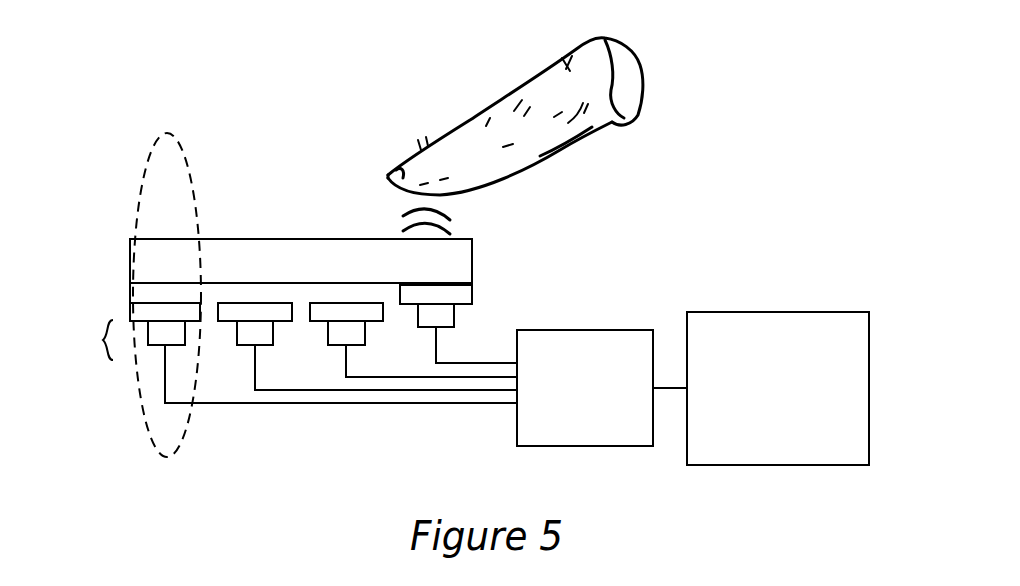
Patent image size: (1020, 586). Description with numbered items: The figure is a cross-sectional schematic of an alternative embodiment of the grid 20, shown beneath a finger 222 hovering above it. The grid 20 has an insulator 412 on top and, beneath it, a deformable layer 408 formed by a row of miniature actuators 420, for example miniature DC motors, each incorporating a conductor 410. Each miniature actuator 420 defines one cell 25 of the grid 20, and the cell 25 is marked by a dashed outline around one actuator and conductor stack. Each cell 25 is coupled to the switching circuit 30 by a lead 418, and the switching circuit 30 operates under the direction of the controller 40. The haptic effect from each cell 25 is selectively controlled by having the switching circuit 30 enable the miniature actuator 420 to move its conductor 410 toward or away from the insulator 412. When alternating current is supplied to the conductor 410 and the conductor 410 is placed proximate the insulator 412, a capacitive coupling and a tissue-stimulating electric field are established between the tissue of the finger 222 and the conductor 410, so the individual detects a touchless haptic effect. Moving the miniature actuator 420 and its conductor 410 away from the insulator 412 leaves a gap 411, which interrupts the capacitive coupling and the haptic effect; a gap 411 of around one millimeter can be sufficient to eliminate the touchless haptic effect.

The finger 222 is at (617, 77).
The grid 20 is at (323, 321).
The cell 25 is at (177, 138).
The insulator 412 is at (301, 261).
The conductor 410 is at (301, 314).
The deformable layer 408 is at (100, 325).
The lead 418 is at (253, 365).
The miniature actuator 420 is at (263, 330).
The gap 411 is at (347, 293).
The switching circuit 30 is at (585, 388).
The controller 40 is at (778, 388).